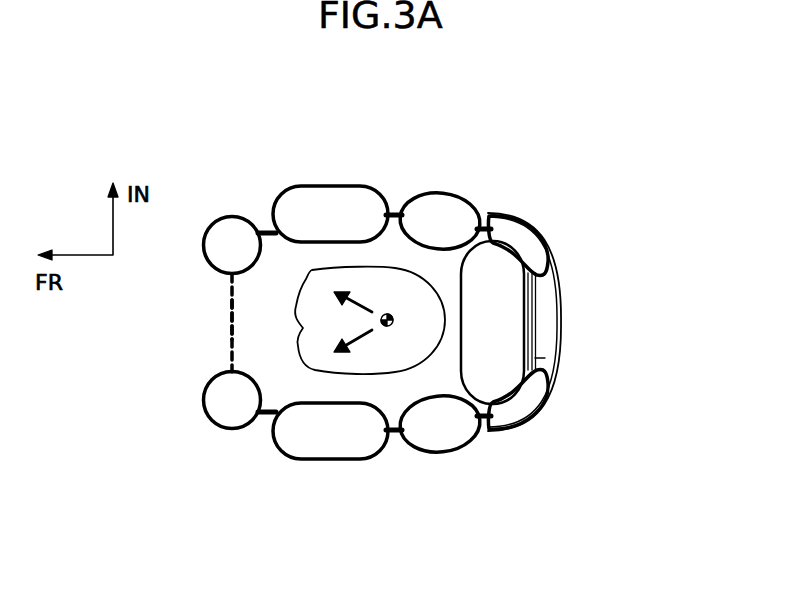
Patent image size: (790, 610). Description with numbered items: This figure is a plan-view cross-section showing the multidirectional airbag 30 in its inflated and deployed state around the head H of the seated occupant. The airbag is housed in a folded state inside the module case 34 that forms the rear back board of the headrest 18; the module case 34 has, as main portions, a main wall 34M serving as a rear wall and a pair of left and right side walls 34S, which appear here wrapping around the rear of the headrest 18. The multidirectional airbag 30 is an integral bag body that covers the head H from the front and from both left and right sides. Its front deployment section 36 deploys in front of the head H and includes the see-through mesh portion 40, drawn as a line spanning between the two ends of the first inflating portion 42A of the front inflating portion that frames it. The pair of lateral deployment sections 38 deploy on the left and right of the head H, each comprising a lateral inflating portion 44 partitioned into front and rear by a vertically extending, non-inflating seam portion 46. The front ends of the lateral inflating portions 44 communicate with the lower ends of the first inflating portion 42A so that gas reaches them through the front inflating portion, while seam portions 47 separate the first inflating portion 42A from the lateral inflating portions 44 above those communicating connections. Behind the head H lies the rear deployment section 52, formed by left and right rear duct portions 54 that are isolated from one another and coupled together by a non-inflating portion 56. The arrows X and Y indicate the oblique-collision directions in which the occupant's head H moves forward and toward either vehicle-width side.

The headrest 18 is at (462, 368).
The multidirectional airbag 30 is at (427, 313).
The module case 34 is at (563, 306).
The main wall 34M is at (563, 355).
The side walls 34S is at (500, 207).
The front deployment section 36 is at (216, 335).
The lateral deployment sections 38 is at (414, 165).
The mesh portion 40 is at (230, 313).
The first inflating portion 42A is at (228, 232).
The lateral inflating portion 44 is at (333, 200).
The seam portion 46 is at (388, 217).
The seam portions 47 is at (262, 232).
The rear deployment section 52 is at (537, 330).
The rear duct portions 54 is at (545, 274).
The non-inflating portion 56 is at (545, 358).
The head H is at (327, 333).